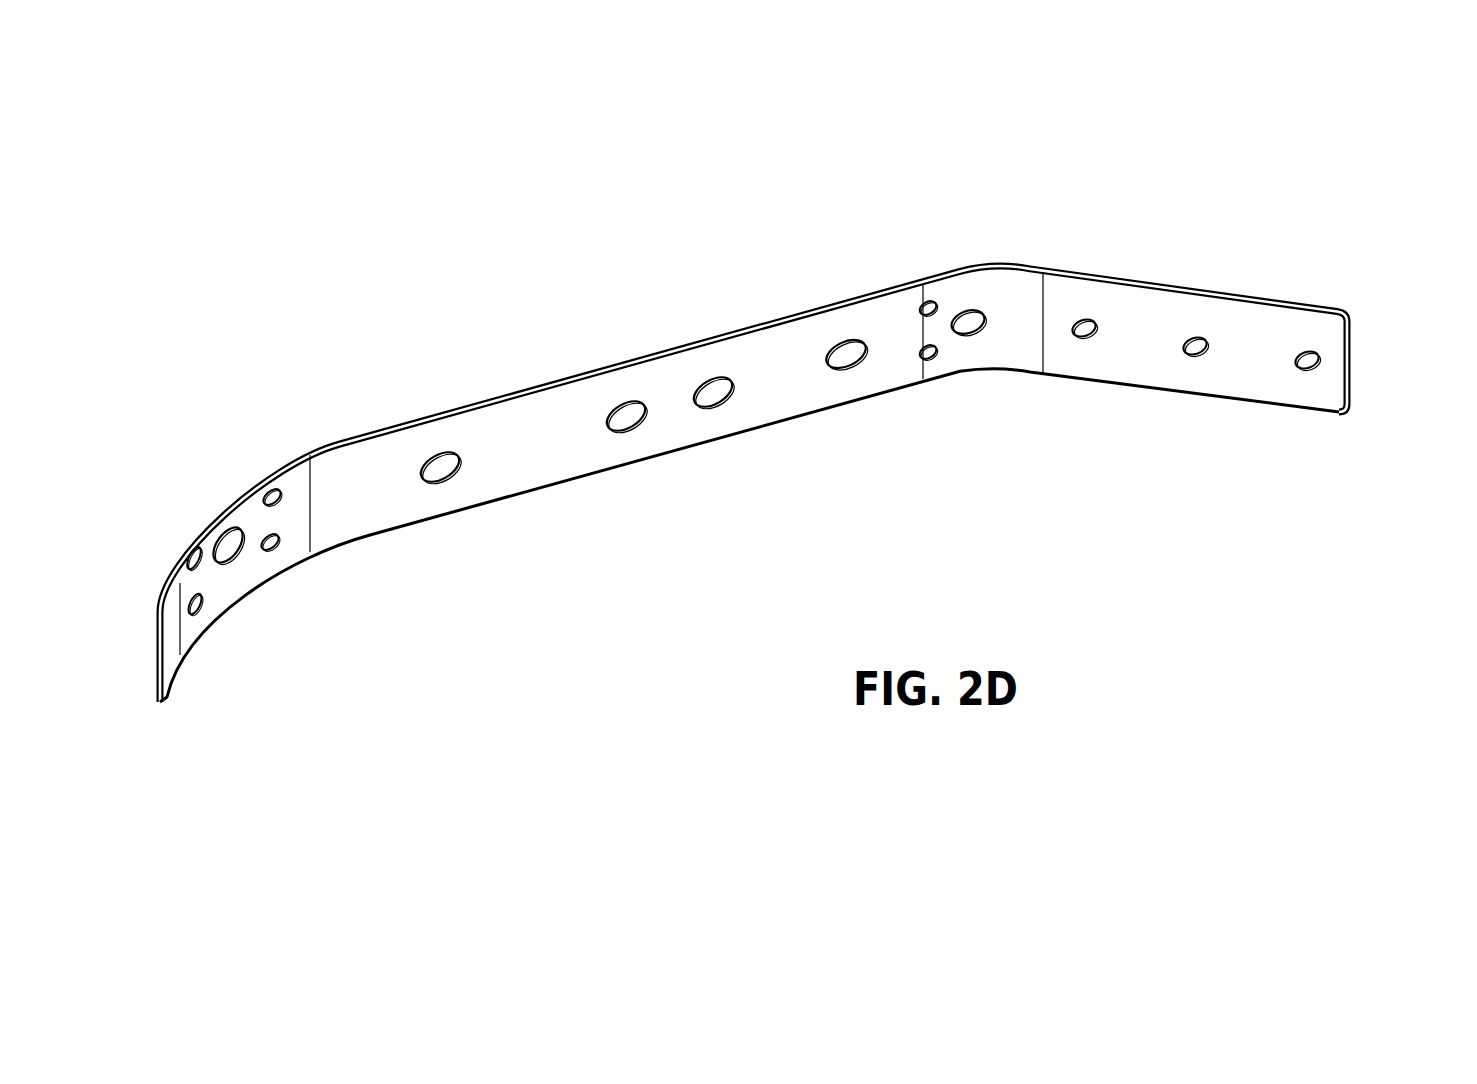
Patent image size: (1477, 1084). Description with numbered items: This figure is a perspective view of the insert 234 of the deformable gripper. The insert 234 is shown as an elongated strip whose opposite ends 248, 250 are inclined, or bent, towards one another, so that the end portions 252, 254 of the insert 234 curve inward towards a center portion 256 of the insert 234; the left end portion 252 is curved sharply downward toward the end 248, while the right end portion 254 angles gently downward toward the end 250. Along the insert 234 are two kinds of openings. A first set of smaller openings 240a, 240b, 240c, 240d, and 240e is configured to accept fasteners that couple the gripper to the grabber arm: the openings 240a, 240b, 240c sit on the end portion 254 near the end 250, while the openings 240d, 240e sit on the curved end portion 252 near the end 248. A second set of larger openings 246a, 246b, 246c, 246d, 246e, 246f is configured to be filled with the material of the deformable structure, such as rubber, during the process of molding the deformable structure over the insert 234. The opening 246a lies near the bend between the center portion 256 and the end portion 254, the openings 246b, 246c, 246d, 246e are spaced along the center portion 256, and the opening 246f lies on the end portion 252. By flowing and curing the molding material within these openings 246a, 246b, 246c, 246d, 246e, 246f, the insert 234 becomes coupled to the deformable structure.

The insert 234 is at (785, 505).
The opening 240a is at (1310, 369).
The opening 240b is at (1193, 335).
The opening 240c is at (1085, 312).
The opening 240d is at (193, 546).
The opening 240e is at (197, 612).
The opening 246a is at (978, 331).
The opening 246b is at (845, 343).
The opening 246c is at (713, 380).
The opening 246d is at (625, 403).
The opening 246e is at (443, 480).
The opening 246f is at (237, 552).
The end 248 is at (157, 640).
The end 250 is at (1352, 376).
The end portion 252 is at (205, 466).
The end portion 254 is at (1187, 440).
The center portion 256 is at (648, 485).